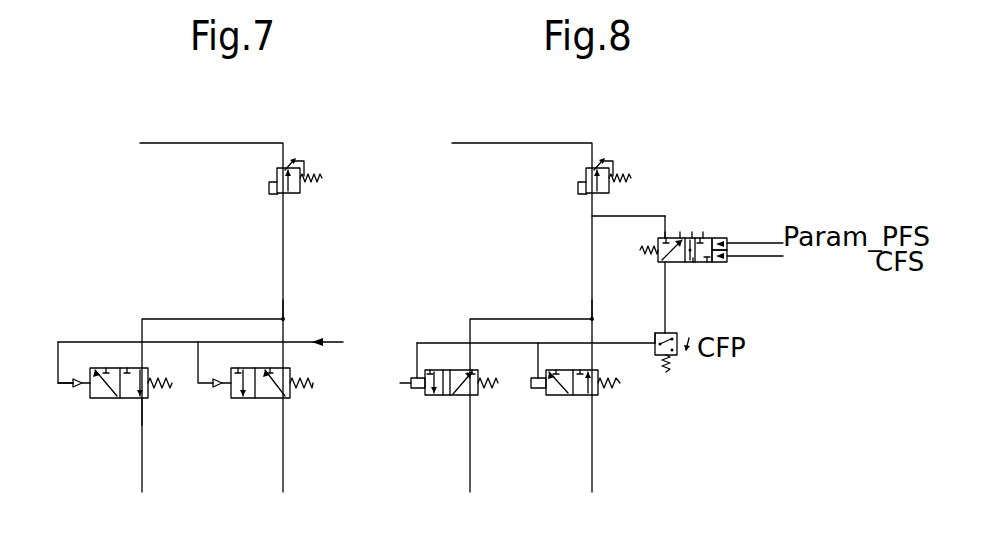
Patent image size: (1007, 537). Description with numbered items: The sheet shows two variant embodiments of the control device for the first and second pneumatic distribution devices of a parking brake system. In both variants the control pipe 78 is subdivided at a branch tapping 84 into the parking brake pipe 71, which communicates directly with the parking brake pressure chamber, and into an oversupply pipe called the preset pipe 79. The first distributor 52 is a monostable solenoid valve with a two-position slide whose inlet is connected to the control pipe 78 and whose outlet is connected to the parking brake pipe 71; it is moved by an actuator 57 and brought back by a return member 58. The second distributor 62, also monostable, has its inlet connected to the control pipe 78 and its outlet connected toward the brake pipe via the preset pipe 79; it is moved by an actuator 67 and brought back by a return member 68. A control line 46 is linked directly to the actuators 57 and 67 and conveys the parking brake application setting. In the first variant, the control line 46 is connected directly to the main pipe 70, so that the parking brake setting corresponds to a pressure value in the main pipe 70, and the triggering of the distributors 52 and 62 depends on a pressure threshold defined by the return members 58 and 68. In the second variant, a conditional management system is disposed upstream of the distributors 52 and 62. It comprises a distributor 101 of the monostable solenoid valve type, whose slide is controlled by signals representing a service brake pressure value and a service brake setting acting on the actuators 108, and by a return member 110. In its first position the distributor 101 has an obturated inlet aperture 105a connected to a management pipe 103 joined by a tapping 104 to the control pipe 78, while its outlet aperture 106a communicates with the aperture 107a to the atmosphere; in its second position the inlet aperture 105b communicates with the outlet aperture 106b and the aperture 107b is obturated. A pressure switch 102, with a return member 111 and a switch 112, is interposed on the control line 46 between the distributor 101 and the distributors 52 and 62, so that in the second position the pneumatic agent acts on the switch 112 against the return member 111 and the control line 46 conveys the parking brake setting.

In FIG. 7, the control pipe 78 is at (196, 143).
In FIG. 8, the control pipe 78 is at (514, 143).
In FIG. 7, the preset pipe 79 is at (213, 319).
In FIG. 8, the preset pipe 79 is at (470, 473).
In FIG. 7, the branch tapping 84 is at (285, 319).
In FIG. 8, the branch tapping 84 is at (593, 319).
In FIG. 7, the control line 46 is at (103, 342).
In FIG. 8, the control line 46 is at (445, 343).
In FIG. 7, the main pipe 70 is at (340, 345).
In FIG. 7, the actuator 67 is at (74, 383).
In FIG. 8, the actuator 67 is at (410, 383).
In FIG. 7, the second distributor 62 is at (104, 399).
In FIG. 8, the second distributor 62 is at (432, 396).
In FIG. 7, the actuator 57 is at (160, 384).
In FIG. 8, the actuator 57 is at (529, 380).
In FIG. 7, the return member 68 is at (143, 402).
In FIG. 7, the first distributor 52 is at (243, 399).
In FIG. 8, the first distributor 52 is at (550, 396).
In FIG. 7, the return member 58 is at (302, 392).
In FIG. 7, the parking brake pipe 71 is at (284, 459).
In FIG. 8, the parking brake pipe 71 is at (593, 475).
In FIG. 8, the management pipe 103 is at (656, 216).
In FIG. 8, the tapping 104 is at (592, 216).
In FIG. 8, the distributor 101 is at (712, 239).
In FIG. 8, the inlet aperture 105a is at (667, 238).
In FIG. 8, the inlet aperture 105b is at (693, 238).
In FIG. 8, the aperture to the atmosphere 107a is at (683, 238).
In FIG. 8, the aperture 107b is at (703, 238).
In FIG. 8, the actuators 108 is at (728, 249).
In FIG. 8, the return member 110 is at (640, 250).
In FIG. 8, the outlet aperture 106a is at (666, 268).
In FIG. 8, the outlet aperture 106b is at (693, 263).
In FIG. 8, the switch 112 is at (657, 333).
In FIG. 8, the pressure switch 102 is at (678, 350).
In FIG. 8, the return member 111 is at (666, 372).